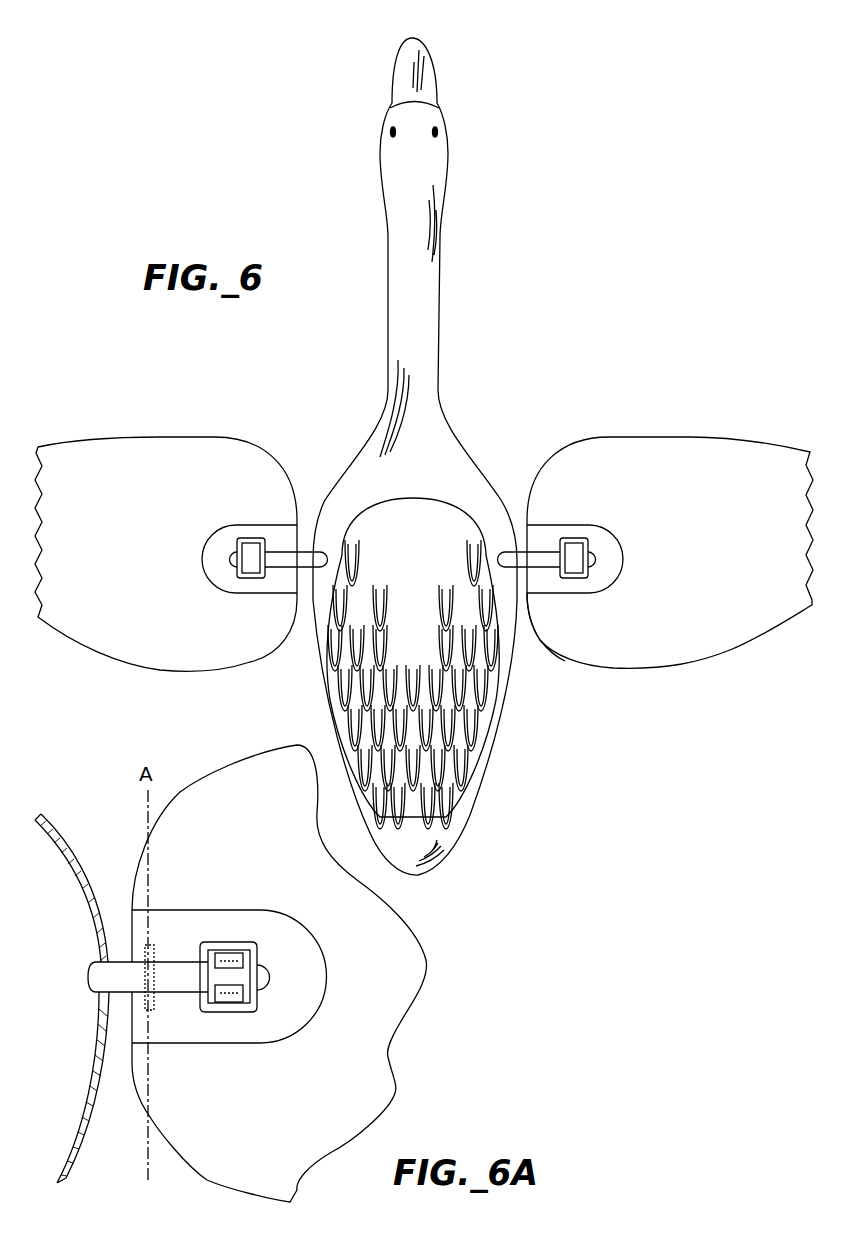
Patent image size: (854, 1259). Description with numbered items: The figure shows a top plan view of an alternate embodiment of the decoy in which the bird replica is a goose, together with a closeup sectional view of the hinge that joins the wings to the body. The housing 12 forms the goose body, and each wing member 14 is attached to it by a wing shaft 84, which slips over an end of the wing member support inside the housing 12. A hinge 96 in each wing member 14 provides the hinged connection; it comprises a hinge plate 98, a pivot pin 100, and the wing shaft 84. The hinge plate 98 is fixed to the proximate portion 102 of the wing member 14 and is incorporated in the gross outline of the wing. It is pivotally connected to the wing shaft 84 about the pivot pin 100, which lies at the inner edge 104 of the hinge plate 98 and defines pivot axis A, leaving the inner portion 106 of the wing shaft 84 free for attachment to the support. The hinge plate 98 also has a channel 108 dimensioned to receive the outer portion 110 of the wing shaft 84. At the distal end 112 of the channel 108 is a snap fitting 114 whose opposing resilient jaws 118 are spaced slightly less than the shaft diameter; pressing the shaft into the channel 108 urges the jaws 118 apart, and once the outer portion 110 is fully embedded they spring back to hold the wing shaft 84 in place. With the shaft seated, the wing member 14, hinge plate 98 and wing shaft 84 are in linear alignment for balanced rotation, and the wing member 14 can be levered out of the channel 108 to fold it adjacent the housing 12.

In FIG. 6, the housing 12 is at (461, 443).
In FIG. 6, the wing member 14 is at (727, 650).
In FIG. 6, the hinge 96 is at (582, 523).
In FIG. 6, the snap fitting 114 is at (575, 578).
In FIG. 6A, the snap fitting 114 is at (250, 998).
In FIG. 6, the proximate portion 102 is at (543, 652).
In FIG. 6A, the hinge plate 98 is at (285, 927).
In FIG. 6A, the pivot pin 100 is at (158, 952).
In FIG. 6A, the outer portion 110 is at (187, 970).
In FIG. 6A, the channel 108 is at (273, 978).
In FIG. 6A, the distal end 112 is at (233, 1013).
In FIG. 6A, the resilient jaws 118 is at (198, 1033).
In FIG. 6A, the inner edge 104 is at (168, 1047).
In FIG. 6A, the inner portion 106 is at (107, 978).
In FIG. 6A, the wing shaft 84 is at (118, 1003).